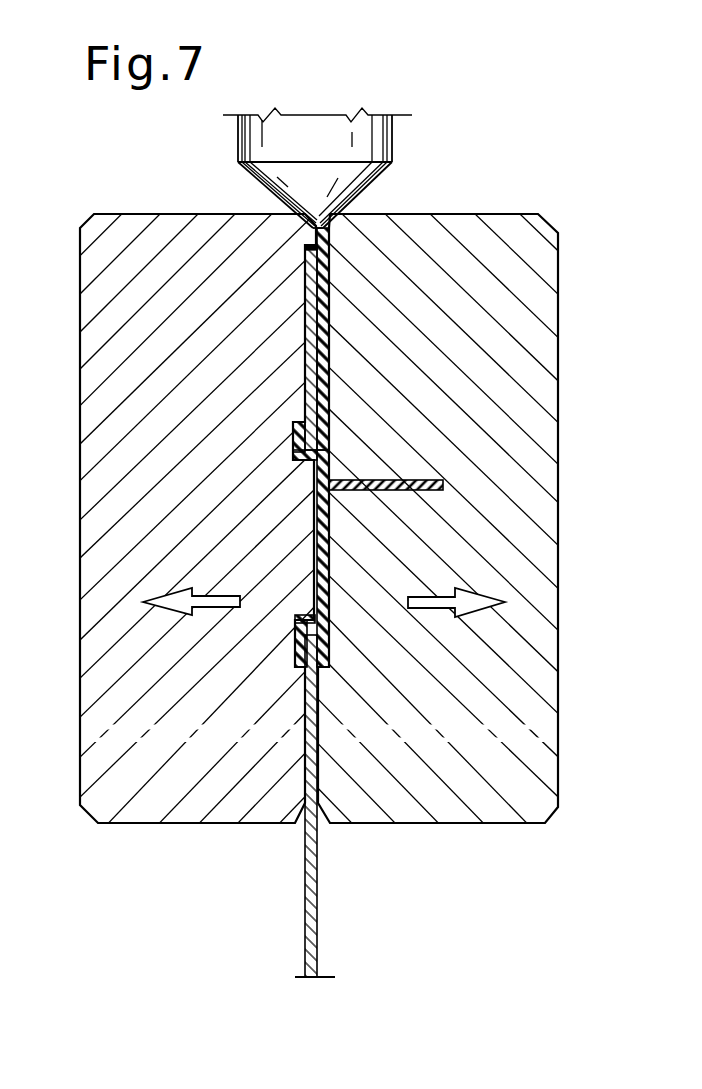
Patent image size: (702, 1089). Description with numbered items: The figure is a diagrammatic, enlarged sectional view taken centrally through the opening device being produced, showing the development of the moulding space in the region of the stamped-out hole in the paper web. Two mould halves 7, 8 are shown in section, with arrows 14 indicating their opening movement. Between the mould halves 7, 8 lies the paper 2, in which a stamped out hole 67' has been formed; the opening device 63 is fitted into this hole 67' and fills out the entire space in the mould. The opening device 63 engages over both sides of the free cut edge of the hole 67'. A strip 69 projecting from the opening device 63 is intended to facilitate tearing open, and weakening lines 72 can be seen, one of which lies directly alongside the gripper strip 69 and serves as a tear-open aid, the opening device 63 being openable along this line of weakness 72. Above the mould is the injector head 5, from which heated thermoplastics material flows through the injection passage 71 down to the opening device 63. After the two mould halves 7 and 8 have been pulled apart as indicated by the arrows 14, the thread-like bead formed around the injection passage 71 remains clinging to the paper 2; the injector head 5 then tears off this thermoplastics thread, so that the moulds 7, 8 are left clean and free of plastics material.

The paper 2 is at (312, 919).
The injector head 5 is at (372, 135).
The mould half 7 is at (123, 751).
The mould half 8 is at (490, 742).
The arrows 14 is at (173, 607).
The opening device 63 is at (330, 547).
The stamped out hole 67' is at (169, 478).
The strip 69 is at (445, 483).
The injection passage 71 is at (330, 335).
The weakening lines 72 is at (320, 455).